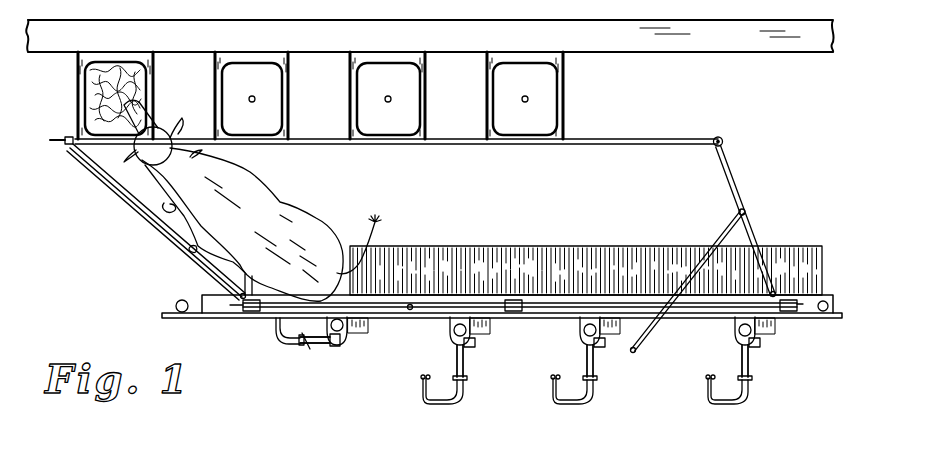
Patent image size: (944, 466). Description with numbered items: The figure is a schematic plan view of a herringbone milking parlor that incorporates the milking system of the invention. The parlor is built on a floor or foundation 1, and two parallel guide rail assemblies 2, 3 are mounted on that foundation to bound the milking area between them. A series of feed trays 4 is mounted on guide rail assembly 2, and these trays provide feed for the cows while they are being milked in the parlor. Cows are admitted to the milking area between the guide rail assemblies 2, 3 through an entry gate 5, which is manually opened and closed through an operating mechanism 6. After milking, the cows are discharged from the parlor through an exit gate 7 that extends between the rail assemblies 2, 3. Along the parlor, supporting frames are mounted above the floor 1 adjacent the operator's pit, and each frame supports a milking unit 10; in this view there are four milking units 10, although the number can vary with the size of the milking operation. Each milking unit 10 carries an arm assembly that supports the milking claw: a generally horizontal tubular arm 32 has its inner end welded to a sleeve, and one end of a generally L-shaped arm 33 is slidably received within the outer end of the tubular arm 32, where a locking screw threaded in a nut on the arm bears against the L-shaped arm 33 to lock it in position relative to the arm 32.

The floor or foundation 1 is at (430, 79).
The guide rail assembly 2 is at (676, 138).
The guide rail assembly 3 is at (822, 322).
The feed tray 4 is at (272, 117).
The entry gate 5 is at (735, 186).
The operating mechanism 6 is at (647, 325).
The exit gate 7 is at (122, 192).
The milking unit 10 is at (368, 340).
The tubular arm 32 is at (314, 345).
The L-shaped arm 33 is at (287, 330).